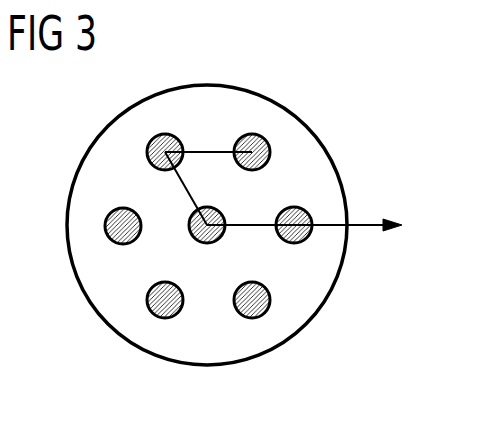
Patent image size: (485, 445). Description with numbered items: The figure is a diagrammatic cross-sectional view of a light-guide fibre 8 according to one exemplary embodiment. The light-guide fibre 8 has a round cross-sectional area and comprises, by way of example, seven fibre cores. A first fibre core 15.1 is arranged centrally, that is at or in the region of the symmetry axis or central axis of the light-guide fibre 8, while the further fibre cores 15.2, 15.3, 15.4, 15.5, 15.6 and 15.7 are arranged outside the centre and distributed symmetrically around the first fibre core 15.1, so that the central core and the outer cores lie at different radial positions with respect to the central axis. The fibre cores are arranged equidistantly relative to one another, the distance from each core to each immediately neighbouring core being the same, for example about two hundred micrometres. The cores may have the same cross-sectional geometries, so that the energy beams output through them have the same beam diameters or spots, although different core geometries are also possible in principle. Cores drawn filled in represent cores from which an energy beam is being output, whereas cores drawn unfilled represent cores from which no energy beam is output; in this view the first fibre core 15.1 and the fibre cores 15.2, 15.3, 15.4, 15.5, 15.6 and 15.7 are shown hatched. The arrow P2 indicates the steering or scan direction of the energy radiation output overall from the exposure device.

The light-guide fibre 8 is at (305, 300).
The arrow indicating steering or scan direction P2 is at (365, 228).
The first fibre core 15.1 is at (188, 223).
The fibre core 15.2 is at (165, 133).
The fibre core 15.3 is at (252, 133).
The fibre core 15.4 is at (298, 207).
The fibre core 15.5 is at (253, 319).
The fibre core 15.6 is at (163, 319).
The fibre core 15.7 is at (123, 245).